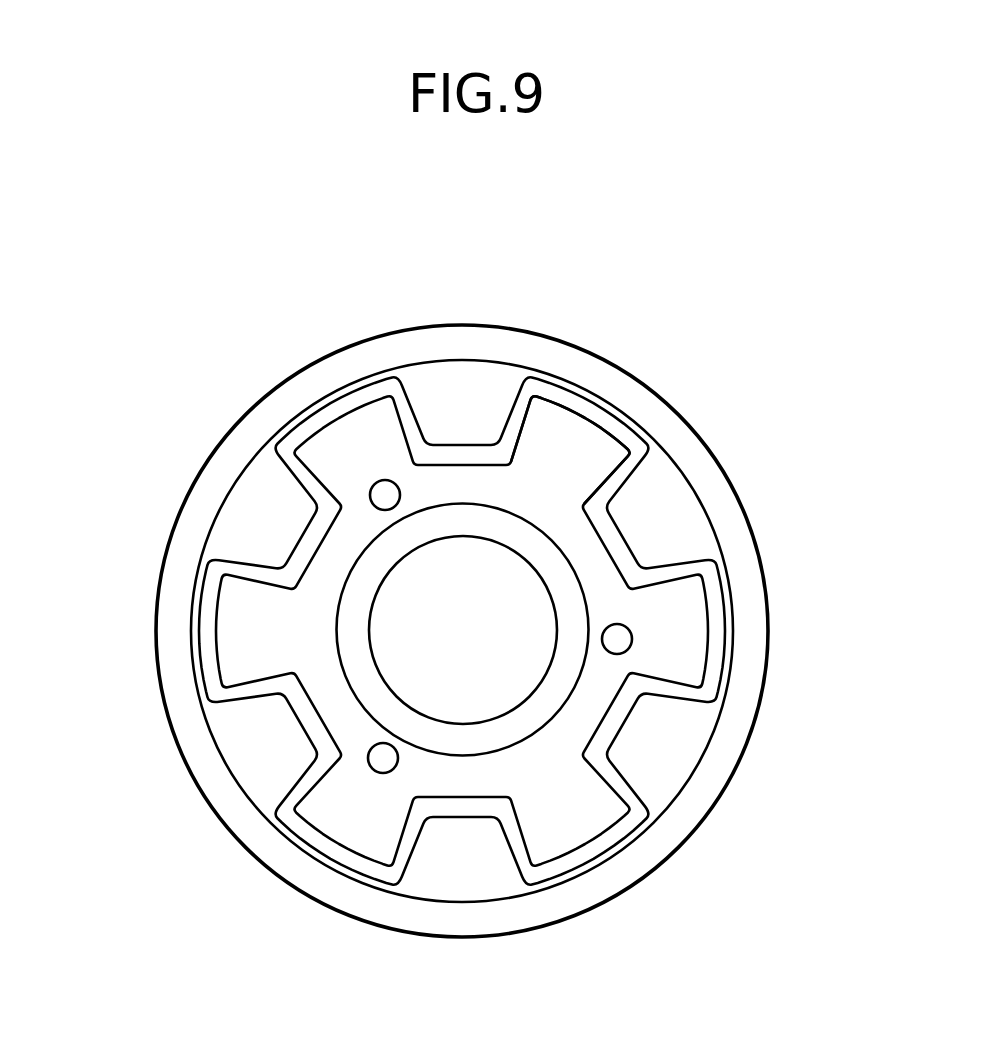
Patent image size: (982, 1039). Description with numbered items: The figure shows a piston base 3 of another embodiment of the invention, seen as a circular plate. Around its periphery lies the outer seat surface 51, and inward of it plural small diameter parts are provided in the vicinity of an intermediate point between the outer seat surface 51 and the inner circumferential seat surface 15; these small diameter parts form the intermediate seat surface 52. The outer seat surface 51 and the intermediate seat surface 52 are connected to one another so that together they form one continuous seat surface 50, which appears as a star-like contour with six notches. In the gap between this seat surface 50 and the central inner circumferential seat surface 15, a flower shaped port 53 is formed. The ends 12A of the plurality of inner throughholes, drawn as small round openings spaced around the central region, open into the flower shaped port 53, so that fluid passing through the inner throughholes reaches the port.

The outer body 3 is at (720, 470).
The seat surface 50 is at (197, 638).
The outer seat surface 51 is at (342, 403).
The intermediate seat surface 52 is at (310, 538).
The flower shaped port 53 is at (567, 463).
The inner circumferential seat surface 15 is at (547, 710).
The ends of inner throughholes 12A is at (632, 639).